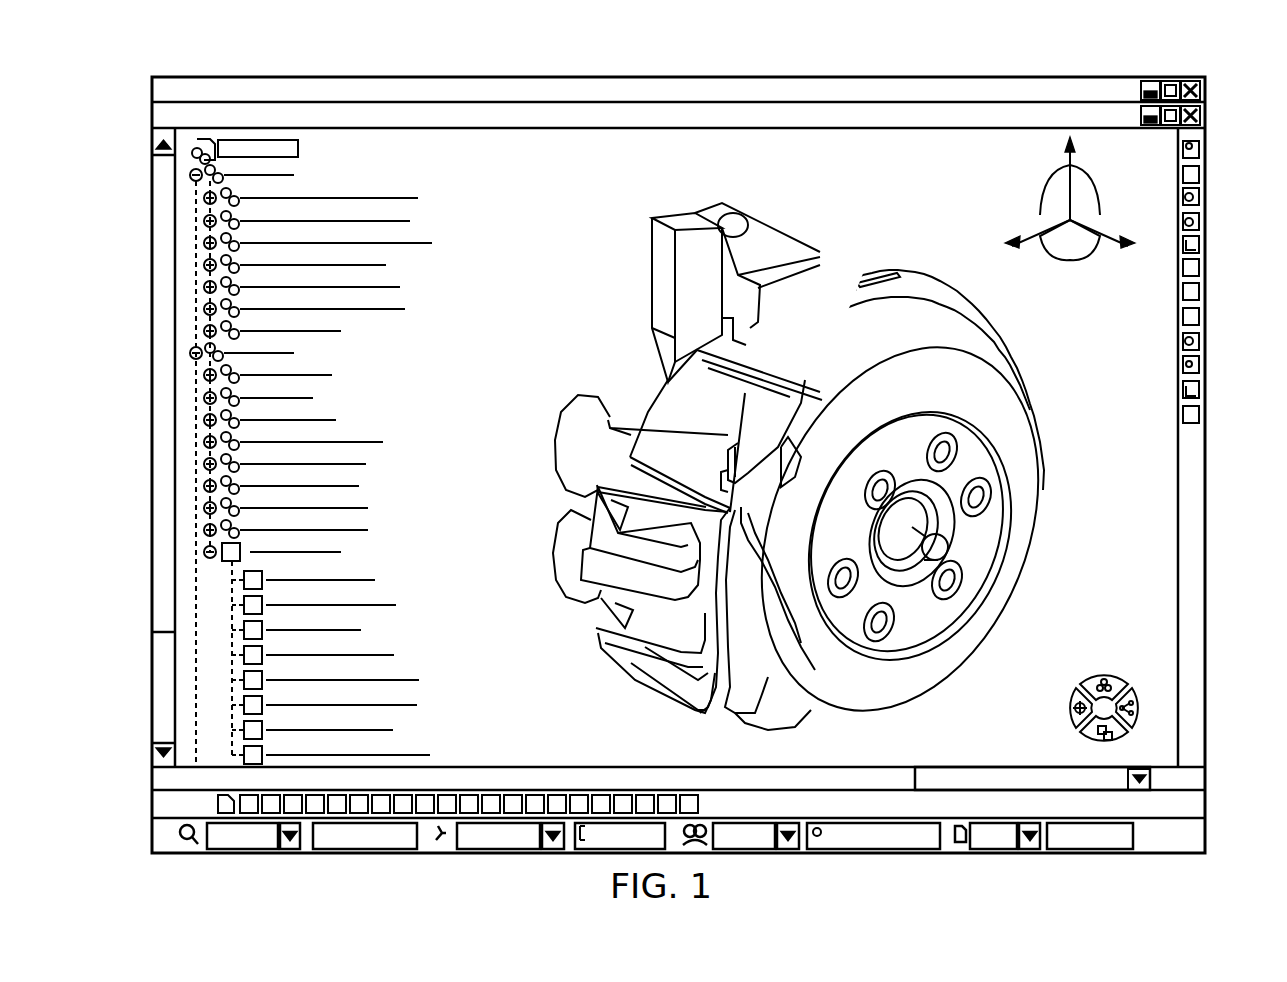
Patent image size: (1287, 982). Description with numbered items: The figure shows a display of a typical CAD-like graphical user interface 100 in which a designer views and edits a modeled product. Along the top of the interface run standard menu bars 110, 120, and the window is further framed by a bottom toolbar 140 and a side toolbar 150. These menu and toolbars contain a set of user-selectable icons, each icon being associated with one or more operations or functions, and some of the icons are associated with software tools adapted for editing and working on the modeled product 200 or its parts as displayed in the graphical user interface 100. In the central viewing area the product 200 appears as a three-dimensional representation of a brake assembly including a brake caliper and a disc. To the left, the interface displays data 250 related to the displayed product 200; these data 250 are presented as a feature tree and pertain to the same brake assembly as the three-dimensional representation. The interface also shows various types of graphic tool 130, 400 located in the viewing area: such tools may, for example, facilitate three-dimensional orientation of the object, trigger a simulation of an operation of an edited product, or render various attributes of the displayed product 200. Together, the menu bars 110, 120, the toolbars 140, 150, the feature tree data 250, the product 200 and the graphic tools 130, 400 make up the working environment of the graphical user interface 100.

The graphical user interface 100 is at (1019, 699).
The menu bar 110 is at (1102, 82).
The menu bar 120 is at (933, 112).
The graphic tool 130 is at (1076, 240).
The bottom toolbar 140 is at (680, 776).
The side toolbar 150 is at (1182, 472).
The modeled product 200 is at (631, 358).
The data 250 is at (366, 442).
The graphic tool 400 is at (1108, 668).